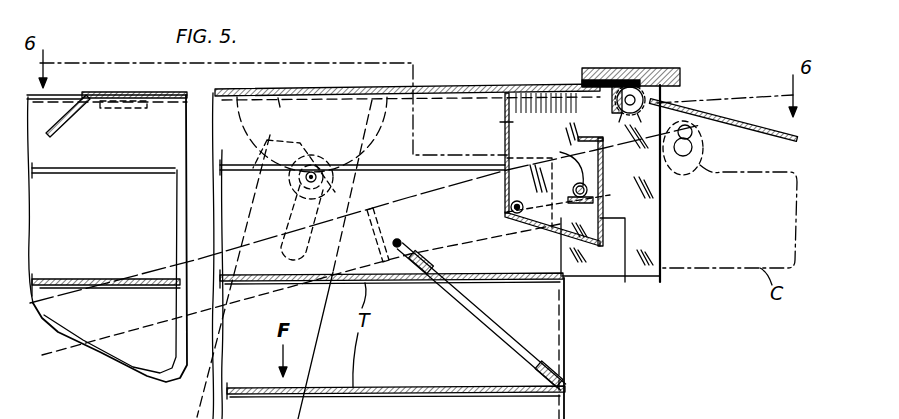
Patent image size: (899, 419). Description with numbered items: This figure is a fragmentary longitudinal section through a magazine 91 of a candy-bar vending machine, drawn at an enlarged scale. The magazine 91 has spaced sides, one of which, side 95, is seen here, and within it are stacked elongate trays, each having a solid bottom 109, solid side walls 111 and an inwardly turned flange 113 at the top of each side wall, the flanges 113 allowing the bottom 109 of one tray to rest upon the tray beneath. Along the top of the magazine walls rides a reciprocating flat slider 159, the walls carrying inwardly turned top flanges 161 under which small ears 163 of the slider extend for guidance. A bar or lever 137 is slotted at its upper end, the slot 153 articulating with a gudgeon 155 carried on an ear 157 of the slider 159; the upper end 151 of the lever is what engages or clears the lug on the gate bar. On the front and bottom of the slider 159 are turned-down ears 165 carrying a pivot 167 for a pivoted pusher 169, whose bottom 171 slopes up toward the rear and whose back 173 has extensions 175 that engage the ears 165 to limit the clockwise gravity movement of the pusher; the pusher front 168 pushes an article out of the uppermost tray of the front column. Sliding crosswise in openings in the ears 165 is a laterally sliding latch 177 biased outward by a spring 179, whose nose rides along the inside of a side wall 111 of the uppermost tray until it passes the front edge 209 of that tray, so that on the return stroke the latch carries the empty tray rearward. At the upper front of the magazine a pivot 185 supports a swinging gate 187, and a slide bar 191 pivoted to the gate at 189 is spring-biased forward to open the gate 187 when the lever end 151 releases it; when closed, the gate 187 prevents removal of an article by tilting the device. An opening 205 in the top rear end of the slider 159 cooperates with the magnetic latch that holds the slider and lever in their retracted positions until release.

The magazine 91 is at (570, 353).
The side 95 is at (105, 357).
The solid bottom 109 is at (481, 275).
The solid side wall 111 is at (125, 231).
The inwardly turned flange 113 is at (133, 174).
The bar 137 is at (323, 318).
The upper end 151 is at (282, 131).
The slot 153 is at (284, 206).
The gudgeon 155 is at (294, 162).
The ear 157 is at (382, 120).
The flat slider 159 is at (470, 87).
The top flange 161 is at (292, 112).
The small ear 163 is at (145, 108).
The turned-down ear 165 is at (515, 116).
The pivot 167 is at (510, 208).
The pusher front 168 is at (603, 158).
The pivoted pusher 169 is at (605, 212).
The bottom 171 is at (535, 217).
The back 173 is at (498, 184).
The extension 175 is at (505, 141).
The laterally sliding latch 177 is at (573, 185).
The spring 179 is at (558, 160).
The pivot 185 is at (657, 103).
The swinging gate 187 is at (773, 128).
The pivot 189 is at (710, 152).
The slide bar 191 is at (422, 190).
The opening 205 is at (100, 96).
The front edge 209 is at (557, 280).